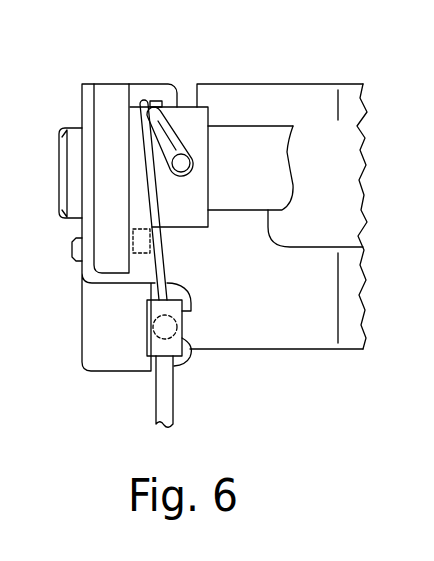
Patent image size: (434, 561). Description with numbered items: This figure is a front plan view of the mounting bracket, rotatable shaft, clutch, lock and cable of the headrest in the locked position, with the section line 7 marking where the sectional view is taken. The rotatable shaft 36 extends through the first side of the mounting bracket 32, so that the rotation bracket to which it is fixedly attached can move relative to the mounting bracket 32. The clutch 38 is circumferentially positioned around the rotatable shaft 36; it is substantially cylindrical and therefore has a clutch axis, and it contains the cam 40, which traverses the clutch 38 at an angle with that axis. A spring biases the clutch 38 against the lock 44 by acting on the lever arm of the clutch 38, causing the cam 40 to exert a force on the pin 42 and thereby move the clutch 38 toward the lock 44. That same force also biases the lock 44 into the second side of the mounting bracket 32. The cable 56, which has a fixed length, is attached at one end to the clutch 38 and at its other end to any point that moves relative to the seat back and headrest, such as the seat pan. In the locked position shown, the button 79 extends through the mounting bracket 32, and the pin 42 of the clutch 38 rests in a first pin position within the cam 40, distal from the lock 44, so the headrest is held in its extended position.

The mounting bracket 32 is at (327, 83).
The rotatable shaft 36 is at (275, 183).
The clutch 38 is at (183, 105).
The cam 40 is at (157, 118).
The pin 42 is at (187, 157).
The lock 44 is at (117, 258).
The cable 56 is at (160, 258).
The button 79 is at (72, 250).
The section line 7- 7 is at (262, 40).